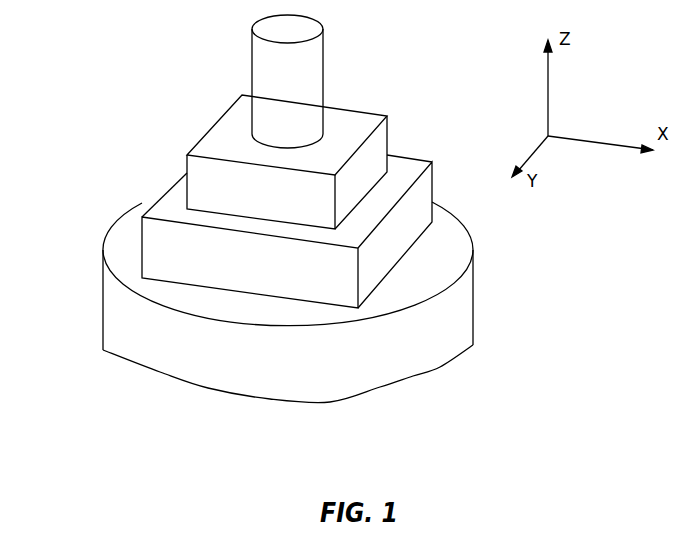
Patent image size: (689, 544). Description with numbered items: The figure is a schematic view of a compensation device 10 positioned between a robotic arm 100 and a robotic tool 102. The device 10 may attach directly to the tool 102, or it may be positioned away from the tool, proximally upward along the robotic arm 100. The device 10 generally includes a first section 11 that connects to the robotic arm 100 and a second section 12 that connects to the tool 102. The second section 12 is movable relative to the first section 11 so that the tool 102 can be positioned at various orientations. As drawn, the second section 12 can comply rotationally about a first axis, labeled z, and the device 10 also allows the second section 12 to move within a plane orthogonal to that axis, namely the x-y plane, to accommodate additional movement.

The compensation device 10 is at (108, 85).
The first section 11 is at (162, 242).
The second section 12 is at (203, 180).
The robotic arm 100 is at (135, 329).
The robotic tool 102 is at (307, 60).